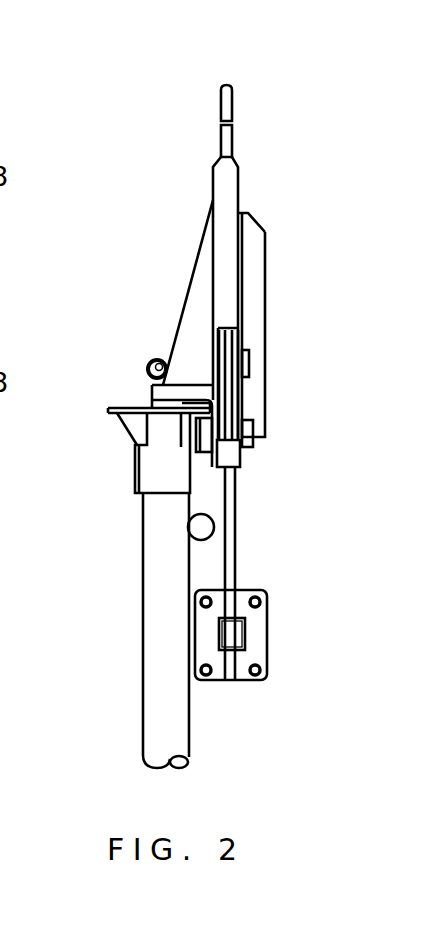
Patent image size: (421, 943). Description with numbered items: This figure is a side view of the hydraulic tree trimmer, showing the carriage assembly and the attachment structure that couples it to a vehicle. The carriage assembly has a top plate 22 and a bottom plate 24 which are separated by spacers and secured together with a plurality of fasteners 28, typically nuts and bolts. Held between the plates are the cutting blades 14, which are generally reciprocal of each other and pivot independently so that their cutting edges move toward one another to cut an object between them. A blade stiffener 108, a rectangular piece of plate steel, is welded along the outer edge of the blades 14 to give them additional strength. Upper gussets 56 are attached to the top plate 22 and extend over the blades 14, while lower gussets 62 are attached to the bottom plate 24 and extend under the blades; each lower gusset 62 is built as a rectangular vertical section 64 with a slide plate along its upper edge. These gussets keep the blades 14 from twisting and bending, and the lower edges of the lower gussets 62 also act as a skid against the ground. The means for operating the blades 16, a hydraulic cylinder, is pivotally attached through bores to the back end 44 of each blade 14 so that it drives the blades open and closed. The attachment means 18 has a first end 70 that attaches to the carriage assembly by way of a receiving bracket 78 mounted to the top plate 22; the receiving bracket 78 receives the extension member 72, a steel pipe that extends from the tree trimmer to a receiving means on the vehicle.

The cutting blades 14 is at (232, 102).
The blade stiffener 108 is at (237, 162).
The rectangular vertical section 64 is at (265, 232).
The lower gussets 62 is at (267, 272).
The fasteners 28 is at (250, 352).
The upper gussets 56 is at (195, 302).
The bottom plate 24 is at (243, 458).
The first end 70 is at (146, 498).
The receiving bracket 78 is at (134, 477).
The attachment means 18 is at (143, 613).
The extension member 72 is at (153, 730).
The means for operating the blades 16 is at (268, 633).
The back end 44 is at (233, 682).
The top plate 22 is at (217, 468).